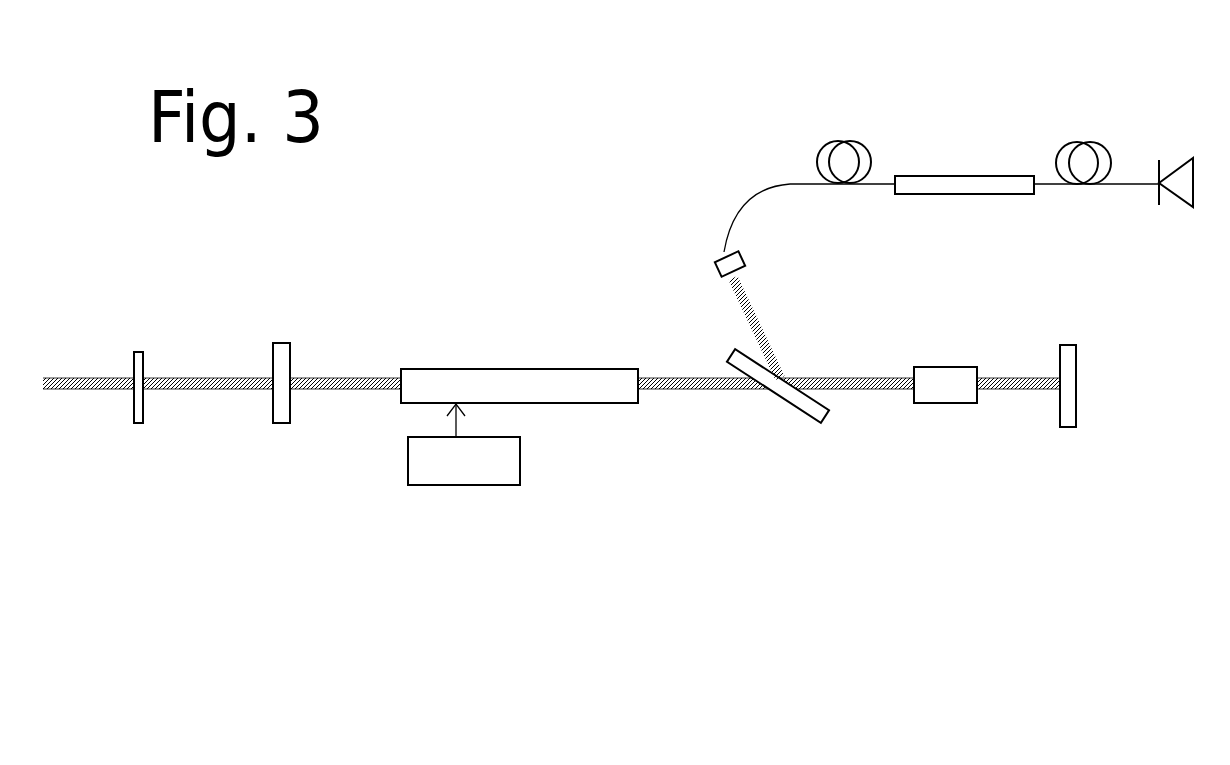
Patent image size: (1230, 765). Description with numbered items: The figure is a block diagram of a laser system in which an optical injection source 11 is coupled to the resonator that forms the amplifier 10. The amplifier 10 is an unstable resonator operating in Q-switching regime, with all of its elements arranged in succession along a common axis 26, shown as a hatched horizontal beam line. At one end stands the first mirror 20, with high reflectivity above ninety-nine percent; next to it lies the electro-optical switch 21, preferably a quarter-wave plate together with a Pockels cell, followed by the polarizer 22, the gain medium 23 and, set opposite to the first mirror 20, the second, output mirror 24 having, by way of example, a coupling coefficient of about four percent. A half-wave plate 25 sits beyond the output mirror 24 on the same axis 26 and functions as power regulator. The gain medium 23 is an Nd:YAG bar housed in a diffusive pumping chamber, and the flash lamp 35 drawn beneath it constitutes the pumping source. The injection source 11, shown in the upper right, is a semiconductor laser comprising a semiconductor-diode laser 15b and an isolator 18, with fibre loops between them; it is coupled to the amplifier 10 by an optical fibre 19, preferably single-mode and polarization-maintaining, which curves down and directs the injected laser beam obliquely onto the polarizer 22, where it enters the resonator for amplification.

The amplifier 10 is at (460, 302).
The optical injection source 11 is at (942, 90).
The semiconductor-diode laser 15b is at (1177, 195).
The isolator 18 is at (967, 187).
The optical fibre 19 is at (747, 207).
The first mirror 20 is at (1067, 400).
The electro-optical switch 21 is at (945, 388).
The polarizer 22 is at (787, 393).
The gain medium 23 is at (519, 387).
The output mirror 24 is at (290, 357).
The half-wave plate 25 is at (143, 365).
The axis 26 is at (363, 387).
The flash lamp 35 is at (464, 444).